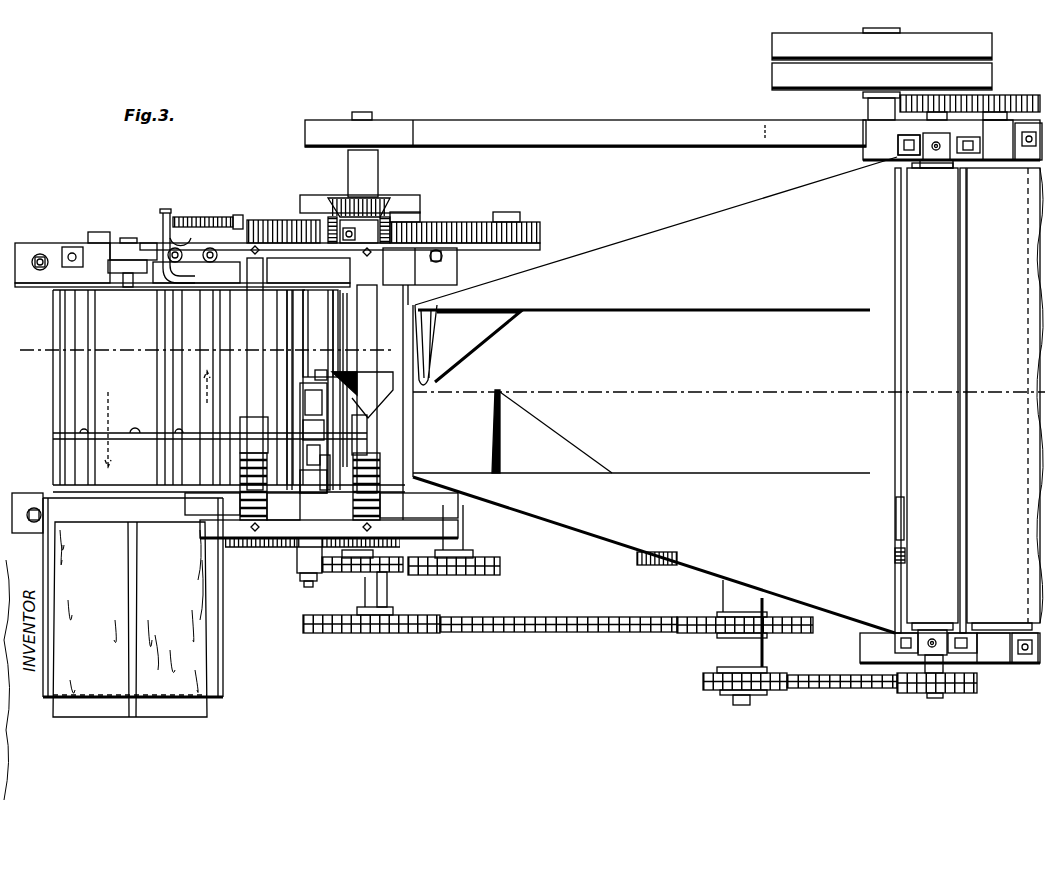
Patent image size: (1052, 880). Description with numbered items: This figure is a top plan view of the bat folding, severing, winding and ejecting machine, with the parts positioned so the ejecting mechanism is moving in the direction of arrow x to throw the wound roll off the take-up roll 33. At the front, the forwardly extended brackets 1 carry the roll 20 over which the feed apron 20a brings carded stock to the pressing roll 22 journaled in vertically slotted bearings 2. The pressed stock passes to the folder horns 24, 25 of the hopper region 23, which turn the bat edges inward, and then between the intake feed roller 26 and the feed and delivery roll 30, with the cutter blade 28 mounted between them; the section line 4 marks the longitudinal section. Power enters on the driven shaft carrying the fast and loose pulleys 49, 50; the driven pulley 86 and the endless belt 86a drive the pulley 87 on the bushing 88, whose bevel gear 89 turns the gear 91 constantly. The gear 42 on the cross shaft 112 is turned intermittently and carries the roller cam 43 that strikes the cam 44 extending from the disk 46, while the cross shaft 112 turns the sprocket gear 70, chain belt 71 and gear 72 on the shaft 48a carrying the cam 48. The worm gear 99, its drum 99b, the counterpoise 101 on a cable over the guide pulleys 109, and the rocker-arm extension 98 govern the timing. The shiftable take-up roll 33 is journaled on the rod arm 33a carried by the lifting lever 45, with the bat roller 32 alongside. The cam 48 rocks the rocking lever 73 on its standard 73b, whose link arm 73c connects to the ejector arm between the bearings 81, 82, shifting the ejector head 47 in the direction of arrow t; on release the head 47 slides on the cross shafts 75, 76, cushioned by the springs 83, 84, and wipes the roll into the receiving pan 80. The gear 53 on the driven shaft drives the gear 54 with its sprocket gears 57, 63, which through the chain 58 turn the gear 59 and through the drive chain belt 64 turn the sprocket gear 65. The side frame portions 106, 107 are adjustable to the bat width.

The forwardly extended brackets 1 is at (866, 160).
The vertically slotted bearings 2 is at (899, 145).
The section line 4— 4 is at (535, 373).
The roll 20 is at (1026, 238).
The feed apron 20a is at (1031, 297).
The pressing roll 22 is at (930, 398).
The hopper 23 is at (655, 395).
The folder horn 24 is at (552, 431).
The folder horn 25 is at (467, 345).
The intake feed roller 26 is at (394, 402).
The cutter blade 28 is at (342, 342).
The feed and delivery roll 30 is at (320, 333).
The roller 32 is at (80, 388).
The bat take-up roll 33 is at (229, 391).
The rod arm 33a is at (138, 298).
The gear 42 is at (540, 234).
The roller cam 43 is at (508, 207).
The cam 44 is at (429, 218).
The lifting lever 45 is at (130, 266).
The disk 46 is at (403, 208).
The ejector head 47 is at (148, 436).
The cam 48 is at (385, 393).
The shaft 48a is at (355, 565).
The fast pulley 49 is at (775, 46).
The loose pulley 50 is at (775, 76).
The gear 53 is at (893, 570).
The gear 54 is at (637, 559).
The sprocket gear 57 is at (727, 672).
The chain 58 is at (819, 679).
The gear 59 is at (922, 695).
The sprocket gear 63 is at (700, 610).
The drive chain belt 64 is at (606, 617).
The sprocket gear 65 is at (388, 634).
The sprocket gear 70 is at (470, 556).
The chain belt 71 is at (407, 567).
The gear 72 is at (380, 578).
The rocking lever 73 is at (312, 492).
The standard 73b is at (314, 378).
The link arm 73c is at (328, 492).
The cross shaft 75 is at (372, 340).
The cross shaft 76 is at (252, 340).
The receiving pan 80 is at (214, 628).
The bearing 81 is at (242, 420).
The bearing 82 is at (368, 445).
The spring 83 is at (238, 492).
The spring 84 is at (383, 503).
The driven pulley 86 is at (776, 144).
The endless belt 86a is at (606, 126).
The pulley 87 is at (340, 154).
The bushing 88 is at (349, 179).
The bevel gear 89 is at (359, 199).
The gear 91 is at (389, 251).
The extension 98 is at (290, 247).
The worm gear 99 is at (285, 250).
The drum 99b is at (270, 220).
The counterpoise 101 is at (163, 212).
The side frame portion 106 is at (44, 287).
The side frame member 107 is at (35, 489).
The guide pulleys 109 is at (230, 216).
The cross shaft 112 is at (440, 570).